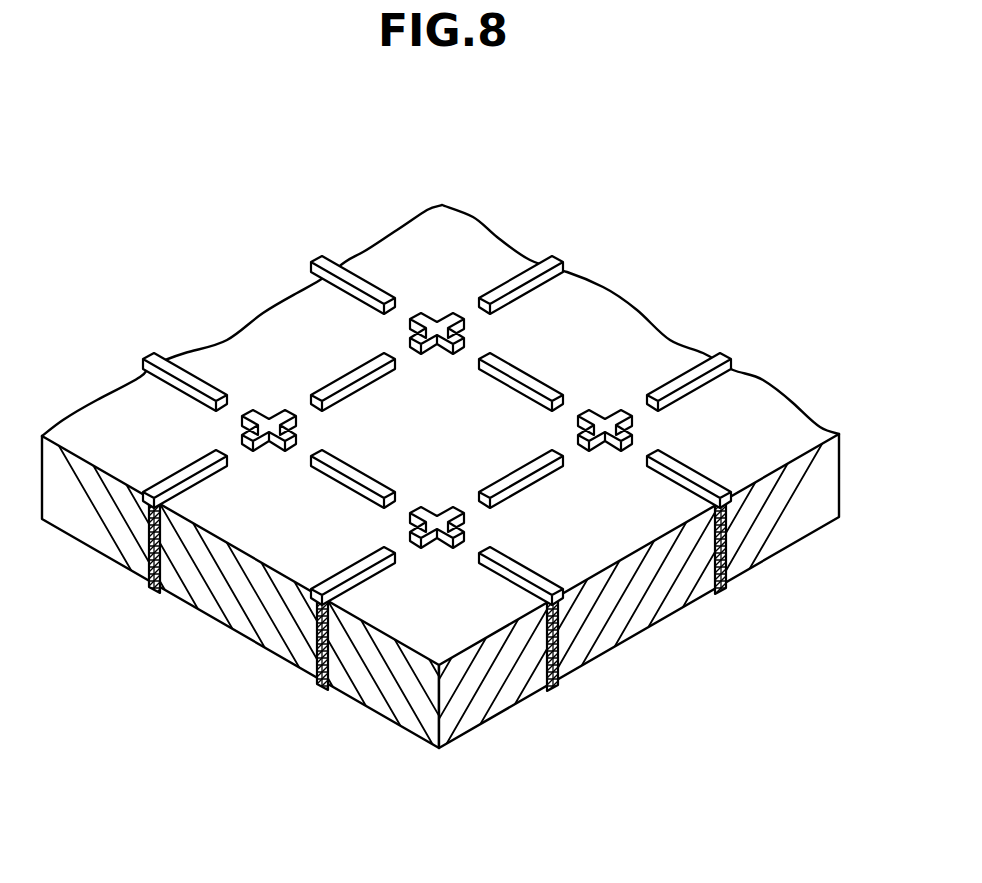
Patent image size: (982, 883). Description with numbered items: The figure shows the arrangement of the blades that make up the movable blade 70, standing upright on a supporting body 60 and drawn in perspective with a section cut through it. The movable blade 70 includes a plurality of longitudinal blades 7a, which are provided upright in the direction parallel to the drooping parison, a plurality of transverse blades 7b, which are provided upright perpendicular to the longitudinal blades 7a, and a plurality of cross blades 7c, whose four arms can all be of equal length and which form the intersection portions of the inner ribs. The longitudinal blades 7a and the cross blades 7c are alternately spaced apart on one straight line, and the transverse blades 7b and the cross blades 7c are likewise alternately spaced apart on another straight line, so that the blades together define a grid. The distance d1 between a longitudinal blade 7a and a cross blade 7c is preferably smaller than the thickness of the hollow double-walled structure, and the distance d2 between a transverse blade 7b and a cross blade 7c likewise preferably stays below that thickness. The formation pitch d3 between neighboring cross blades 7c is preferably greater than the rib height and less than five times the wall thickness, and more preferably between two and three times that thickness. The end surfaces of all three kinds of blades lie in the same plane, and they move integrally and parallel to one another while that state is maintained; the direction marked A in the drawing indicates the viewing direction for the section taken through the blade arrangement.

The substrate 60 is at (601, 258).
The movable blade 70 is at (345, 162).
The longitudinal blade 7a is at (150, 366).
The transverse blade 7b is at (343, 377).
The cross blade 7c is at (260, 410).
The distance between longitudinal blade and cross blade d1 is at (298, 425).
The distance between transverse blade and cross blade d2 is at (480, 480).
The formation pitch between cross blades d3 is at (634, 443).
The section direction A is at (432, 609).